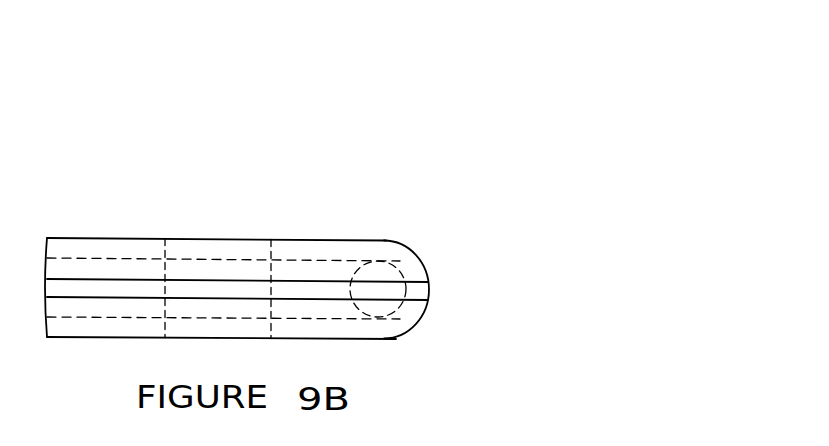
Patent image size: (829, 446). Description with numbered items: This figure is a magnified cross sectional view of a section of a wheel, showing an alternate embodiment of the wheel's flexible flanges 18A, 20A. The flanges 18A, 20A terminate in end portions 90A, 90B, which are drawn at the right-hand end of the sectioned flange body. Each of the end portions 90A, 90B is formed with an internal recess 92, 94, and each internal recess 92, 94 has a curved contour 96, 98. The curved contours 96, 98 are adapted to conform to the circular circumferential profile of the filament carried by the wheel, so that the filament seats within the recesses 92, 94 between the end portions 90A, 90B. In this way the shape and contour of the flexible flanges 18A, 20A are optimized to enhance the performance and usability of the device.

The flange 18A is at (294, 249).
The curved contour 96 is at (364, 243).
The end portion 90A is at (388, 243).
The internal recess 92 is at (385, 273).
The internal recess 94 is at (390, 314).
The end portion 90B is at (394, 338).
The flange 20A is at (340, 339).
The curved contour 98 is at (395, 317).